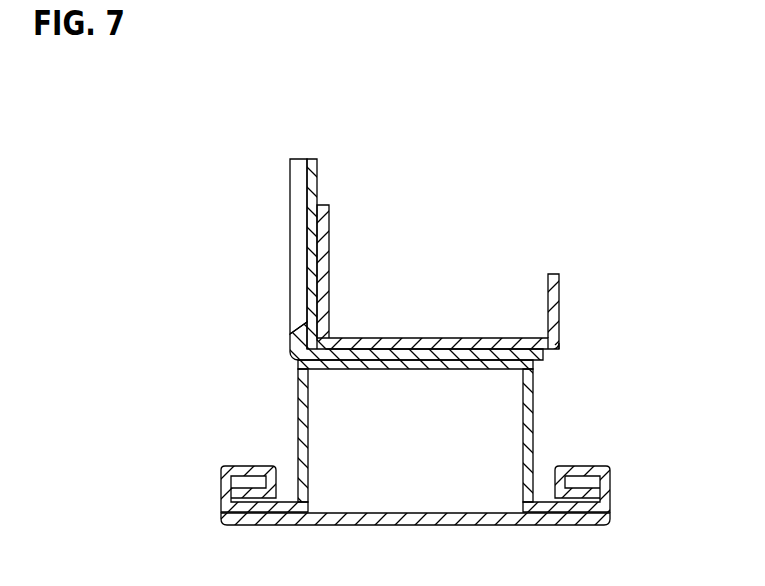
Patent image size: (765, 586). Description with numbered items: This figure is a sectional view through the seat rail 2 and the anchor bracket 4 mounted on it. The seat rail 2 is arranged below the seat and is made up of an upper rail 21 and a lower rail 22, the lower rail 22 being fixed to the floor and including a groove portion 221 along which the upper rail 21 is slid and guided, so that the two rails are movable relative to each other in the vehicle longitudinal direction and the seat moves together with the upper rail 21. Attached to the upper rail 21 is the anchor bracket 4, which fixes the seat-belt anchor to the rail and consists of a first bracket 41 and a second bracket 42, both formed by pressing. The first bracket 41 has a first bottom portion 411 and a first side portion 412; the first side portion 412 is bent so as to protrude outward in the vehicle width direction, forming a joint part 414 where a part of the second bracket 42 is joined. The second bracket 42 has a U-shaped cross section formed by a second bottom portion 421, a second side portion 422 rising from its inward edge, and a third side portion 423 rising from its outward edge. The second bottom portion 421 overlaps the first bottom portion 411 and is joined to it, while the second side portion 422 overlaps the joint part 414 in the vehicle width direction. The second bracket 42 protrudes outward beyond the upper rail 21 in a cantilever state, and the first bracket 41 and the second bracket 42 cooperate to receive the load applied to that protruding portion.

The seat rail 2 is at (445, 468).
The upper rail 21 is at (533, 407).
The lower rail 22 is at (610, 498).
The groove portion 221 is at (408, 513).
The anchor bracket 4 is at (426, 295).
The first bracket 41 is at (380, 295).
The first bottom portion 411 is at (363, 353).
The first side portion 412 is at (290, 307).
The joint part 414 is at (318, 173).
The second bracket 42 is at (476, 277).
The second bottom portion 421 is at (493, 335).
The second side portion 422 is at (329, 211).
The third side portion 423 is at (560, 300).